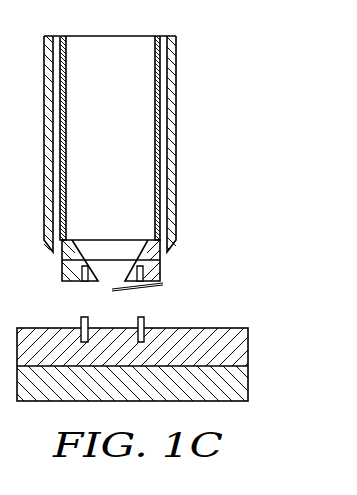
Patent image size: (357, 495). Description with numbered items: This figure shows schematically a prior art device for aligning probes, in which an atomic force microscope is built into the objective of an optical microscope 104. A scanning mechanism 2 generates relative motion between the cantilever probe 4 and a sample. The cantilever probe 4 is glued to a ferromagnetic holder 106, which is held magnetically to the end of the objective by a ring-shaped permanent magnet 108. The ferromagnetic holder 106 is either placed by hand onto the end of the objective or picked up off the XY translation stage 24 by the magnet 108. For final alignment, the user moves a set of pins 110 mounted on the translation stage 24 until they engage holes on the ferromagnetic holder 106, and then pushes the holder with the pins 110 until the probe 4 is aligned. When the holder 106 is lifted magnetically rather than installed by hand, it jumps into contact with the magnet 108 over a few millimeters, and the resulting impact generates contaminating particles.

The scanning mechanism 2 is at (160, 73).
The objective of an optical microscope 104 is at (177, 132).
The ring-shaped permanent magnet 108 is at (161, 263).
The ferromagnetic holder 106 is at (152, 272).
The cantilever probe 4 is at (152, 287).
The XY translation stage 24 is at (248, 345).
The pins 110 is at (138, 321).